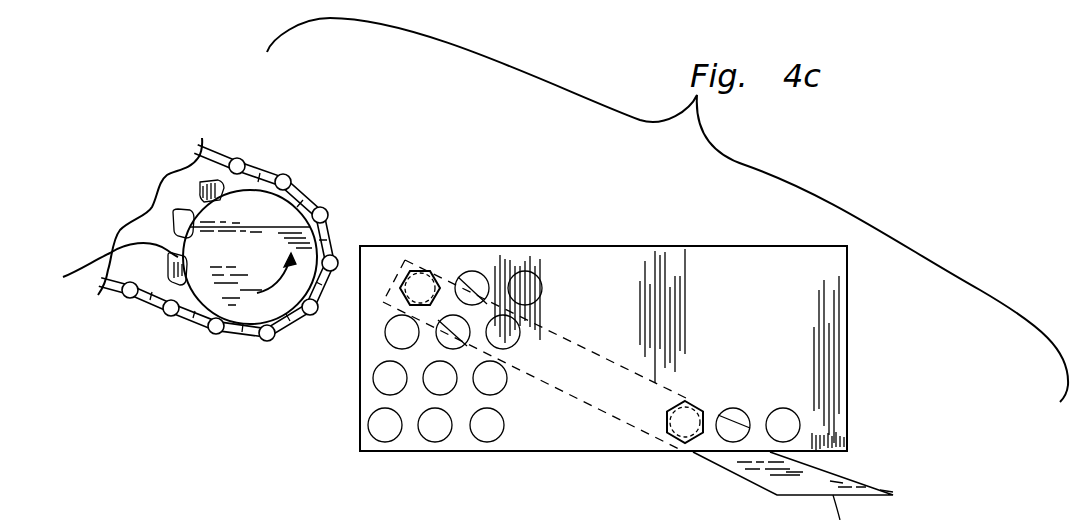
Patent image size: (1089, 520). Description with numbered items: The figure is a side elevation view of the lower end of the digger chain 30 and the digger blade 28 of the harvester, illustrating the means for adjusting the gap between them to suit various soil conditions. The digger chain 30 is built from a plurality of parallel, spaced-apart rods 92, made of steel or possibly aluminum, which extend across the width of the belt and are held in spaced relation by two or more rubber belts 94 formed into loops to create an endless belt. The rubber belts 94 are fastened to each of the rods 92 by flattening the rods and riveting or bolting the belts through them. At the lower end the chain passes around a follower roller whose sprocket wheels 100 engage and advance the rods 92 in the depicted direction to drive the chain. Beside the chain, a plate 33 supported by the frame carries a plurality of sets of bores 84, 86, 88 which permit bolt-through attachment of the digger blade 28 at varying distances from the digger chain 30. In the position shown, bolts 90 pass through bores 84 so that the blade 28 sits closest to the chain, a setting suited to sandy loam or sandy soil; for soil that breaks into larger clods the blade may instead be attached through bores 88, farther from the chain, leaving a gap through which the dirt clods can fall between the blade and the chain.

The digger blade 28 is at (880, 518).
The digger chain 30 is at (137, 200).
The plate 33 is at (627, 245).
The bores 84 is at (425, 272).
The bores 86 is at (472, 272).
The bores 88 is at (527, 273).
The bolts 90 is at (390, 287).
The rods 92 is at (240, 158).
The rubber belts 94 is at (265, 173).
The sprocket wheels 100 is at (100, 260).